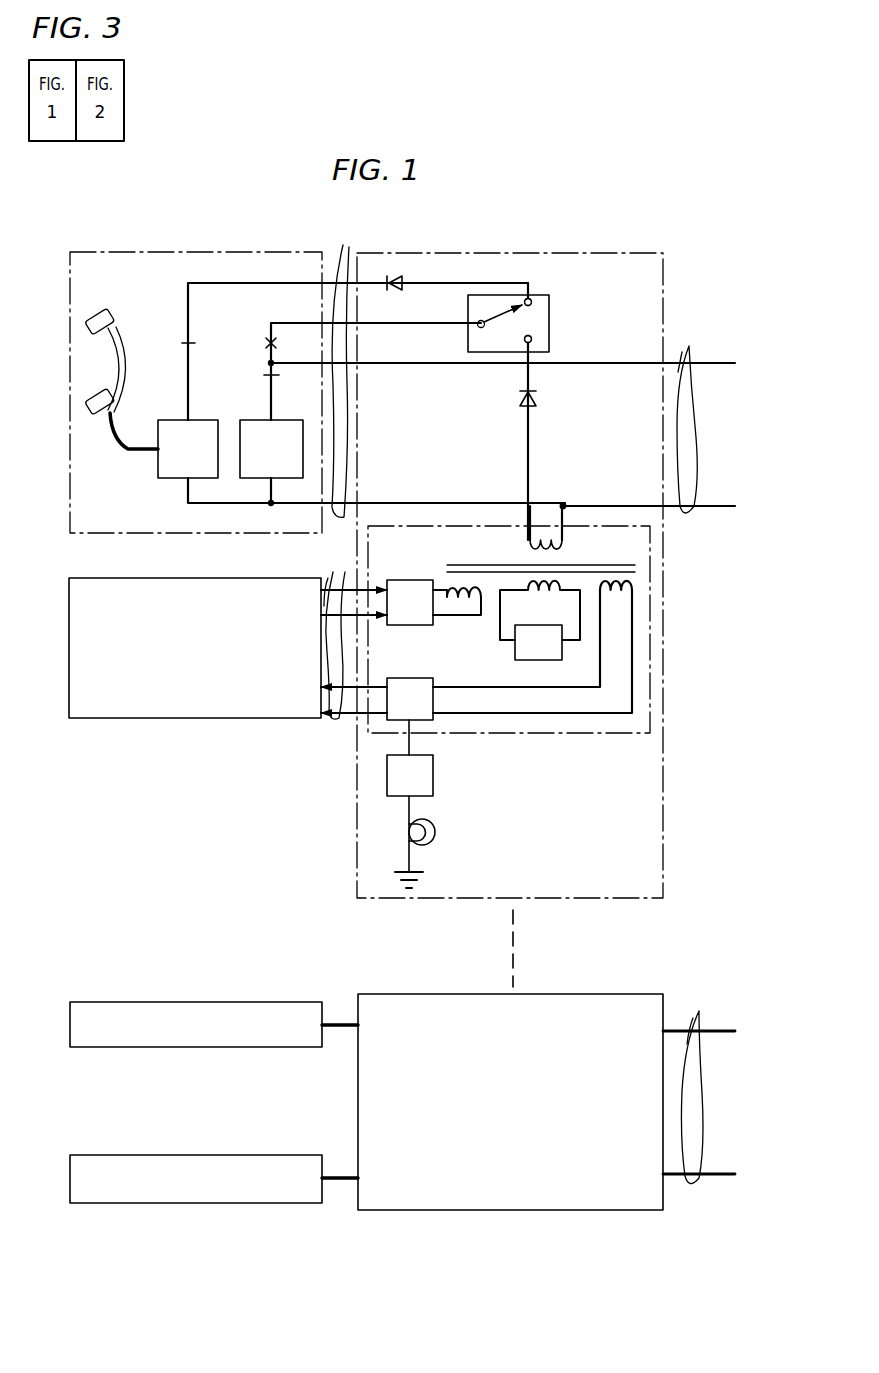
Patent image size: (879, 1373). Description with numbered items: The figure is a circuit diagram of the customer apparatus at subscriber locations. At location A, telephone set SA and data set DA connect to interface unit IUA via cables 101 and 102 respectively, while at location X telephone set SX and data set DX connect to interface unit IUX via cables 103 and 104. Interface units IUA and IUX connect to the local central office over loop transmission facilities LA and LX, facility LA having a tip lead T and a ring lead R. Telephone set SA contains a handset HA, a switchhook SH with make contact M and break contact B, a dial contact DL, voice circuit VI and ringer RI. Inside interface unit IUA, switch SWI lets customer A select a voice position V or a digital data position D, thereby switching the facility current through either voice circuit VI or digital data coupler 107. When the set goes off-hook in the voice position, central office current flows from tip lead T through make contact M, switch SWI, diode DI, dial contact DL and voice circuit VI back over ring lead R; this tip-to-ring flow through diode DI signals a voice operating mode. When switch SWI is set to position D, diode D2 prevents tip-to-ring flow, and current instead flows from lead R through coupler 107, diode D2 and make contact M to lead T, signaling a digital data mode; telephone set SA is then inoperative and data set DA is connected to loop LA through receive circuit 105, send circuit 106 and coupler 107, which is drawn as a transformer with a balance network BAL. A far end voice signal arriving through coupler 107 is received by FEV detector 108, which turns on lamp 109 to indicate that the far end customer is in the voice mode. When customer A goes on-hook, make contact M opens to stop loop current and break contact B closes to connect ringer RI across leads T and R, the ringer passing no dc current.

The cable 101 is at (339, 369).
The cable 102 is at (354, 633).
The cable 103 is at (342, 1022).
The cable 104 is at (342, 1176).
The receive circuit 105 is at (422, 579).
The send circuit 106 is at (422, 678).
The digital data coupler 107 is at (509, 639).
The FEV detector 108 is at (434, 779).
The lamp 109 is at (432, 834).
The telephone set SA is at (196, 392).
The handset HA is at (122, 334).
The dial contact DL is at (187, 343).
The voice circuit VI is at (197, 420).
The ringer RI is at (285, 420).
The break contact B is at (264, 374).
The make contact M is at (268, 336).
The switchhook SH is at (277, 361).
The tip lead T is at (503, 353).
The ring lead R is at (647, 497).
The diode DI is at (401, 282).
The switch SWI is at (467, 346).
The voice position V is at (536, 307).
The digital data position D is at (523, 340).
The diode D2 is at (538, 398).
The loop transmission facility LA is at (693, 417).
The balance network BAL is at (538, 642).
The data set DA is at (195, 648).
The interface unit IUA is at (510, 575).
The telephone set SX is at (196, 1024).
The data set DX is at (196, 1179).
The interface unit IUX is at (510, 1102).
The loop transmission facility LX is at (699, 1087).